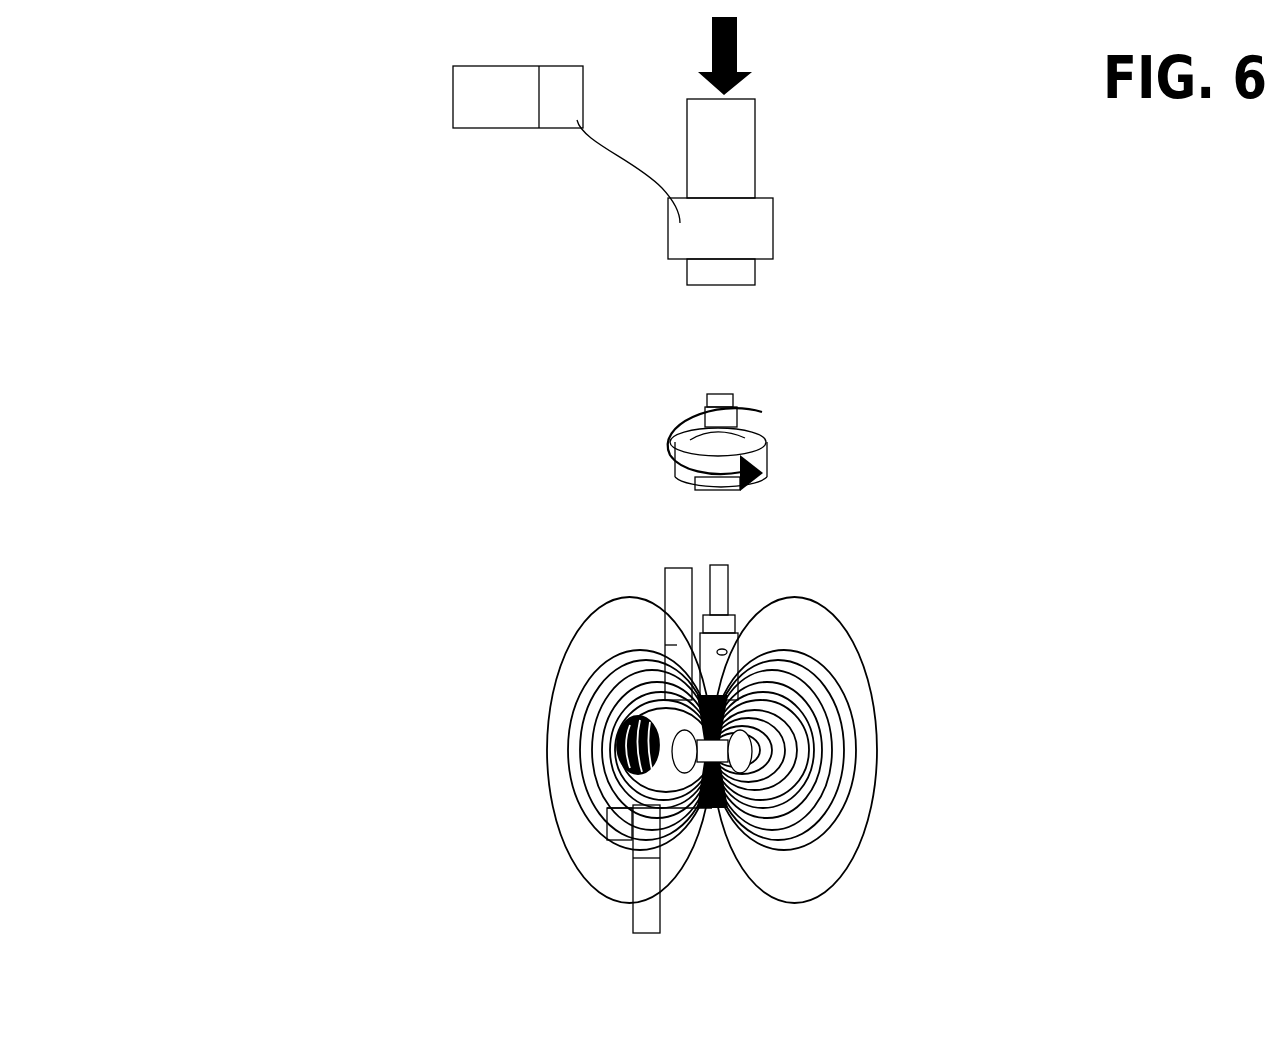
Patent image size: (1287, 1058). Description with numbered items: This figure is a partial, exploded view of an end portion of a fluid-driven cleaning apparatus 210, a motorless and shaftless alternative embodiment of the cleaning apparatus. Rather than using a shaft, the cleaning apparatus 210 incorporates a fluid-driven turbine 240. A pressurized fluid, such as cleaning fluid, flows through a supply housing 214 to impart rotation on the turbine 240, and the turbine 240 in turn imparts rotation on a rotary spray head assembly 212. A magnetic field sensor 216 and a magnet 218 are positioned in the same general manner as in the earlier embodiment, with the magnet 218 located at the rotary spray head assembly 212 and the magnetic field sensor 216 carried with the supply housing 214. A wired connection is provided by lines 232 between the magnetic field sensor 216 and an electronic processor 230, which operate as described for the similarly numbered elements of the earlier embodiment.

The cleaning apparatus 210 is at (498, 483).
The rotary spray head assembly 212 is at (798, 672).
The supply housing 214 is at (740, 167).
The magnetic field sensor 216 is at (762, 237).
The magnet 218 is at (716, 770).
The electronic processor 230 is at (482, 100).
The lines 232 is at (627, 177).
The fluid-driven turbine 240 is at (762, 435).